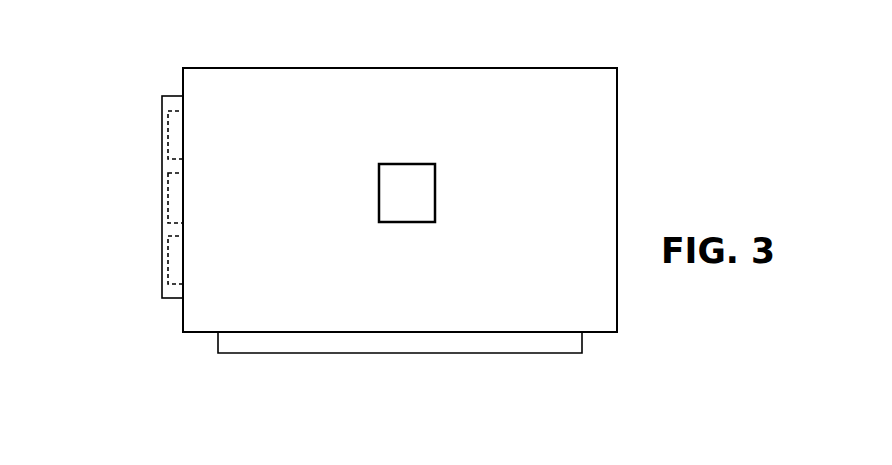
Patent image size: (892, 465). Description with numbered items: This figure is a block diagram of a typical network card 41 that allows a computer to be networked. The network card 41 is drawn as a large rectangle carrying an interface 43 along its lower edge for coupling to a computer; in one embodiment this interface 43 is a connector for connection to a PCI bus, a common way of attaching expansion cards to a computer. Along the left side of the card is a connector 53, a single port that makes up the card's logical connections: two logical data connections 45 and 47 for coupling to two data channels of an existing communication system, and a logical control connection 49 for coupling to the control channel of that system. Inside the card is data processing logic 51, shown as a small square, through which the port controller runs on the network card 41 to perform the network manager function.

The network card 41 is at (400, 66).
The interface 43 is at (400, 354).
The logical data connection 45 is at (183, 135).
The logical data connection 47 is at (183, 197).
The logical control connection 49 is at (183, 258).
The data processing logic 51 is at (436, 192).
The connector 53 is at (162, 196).